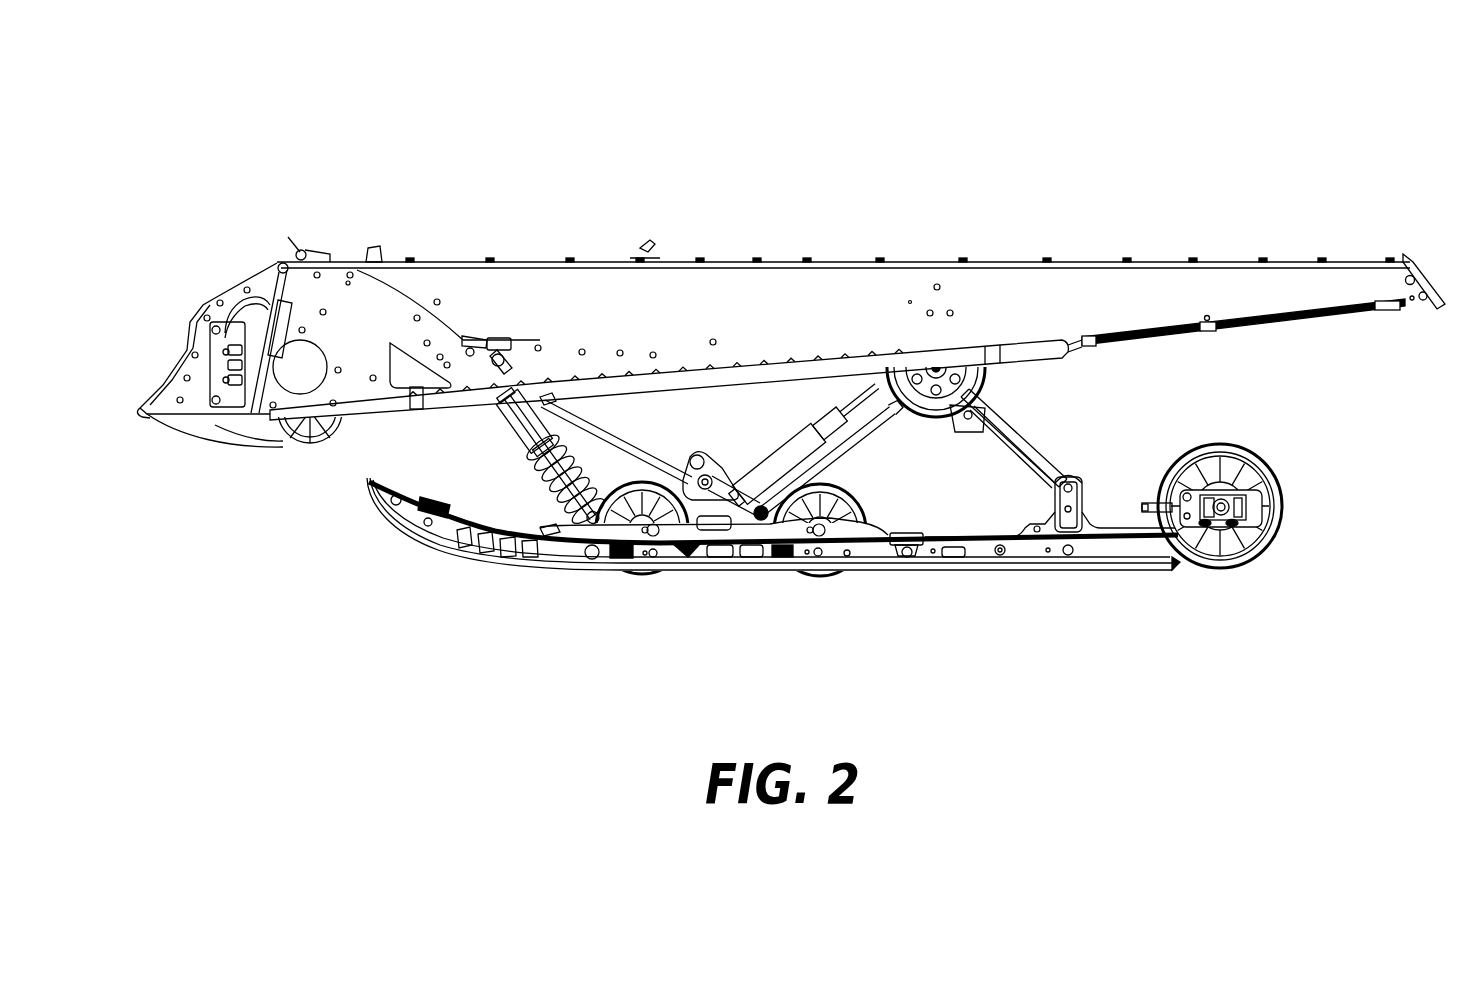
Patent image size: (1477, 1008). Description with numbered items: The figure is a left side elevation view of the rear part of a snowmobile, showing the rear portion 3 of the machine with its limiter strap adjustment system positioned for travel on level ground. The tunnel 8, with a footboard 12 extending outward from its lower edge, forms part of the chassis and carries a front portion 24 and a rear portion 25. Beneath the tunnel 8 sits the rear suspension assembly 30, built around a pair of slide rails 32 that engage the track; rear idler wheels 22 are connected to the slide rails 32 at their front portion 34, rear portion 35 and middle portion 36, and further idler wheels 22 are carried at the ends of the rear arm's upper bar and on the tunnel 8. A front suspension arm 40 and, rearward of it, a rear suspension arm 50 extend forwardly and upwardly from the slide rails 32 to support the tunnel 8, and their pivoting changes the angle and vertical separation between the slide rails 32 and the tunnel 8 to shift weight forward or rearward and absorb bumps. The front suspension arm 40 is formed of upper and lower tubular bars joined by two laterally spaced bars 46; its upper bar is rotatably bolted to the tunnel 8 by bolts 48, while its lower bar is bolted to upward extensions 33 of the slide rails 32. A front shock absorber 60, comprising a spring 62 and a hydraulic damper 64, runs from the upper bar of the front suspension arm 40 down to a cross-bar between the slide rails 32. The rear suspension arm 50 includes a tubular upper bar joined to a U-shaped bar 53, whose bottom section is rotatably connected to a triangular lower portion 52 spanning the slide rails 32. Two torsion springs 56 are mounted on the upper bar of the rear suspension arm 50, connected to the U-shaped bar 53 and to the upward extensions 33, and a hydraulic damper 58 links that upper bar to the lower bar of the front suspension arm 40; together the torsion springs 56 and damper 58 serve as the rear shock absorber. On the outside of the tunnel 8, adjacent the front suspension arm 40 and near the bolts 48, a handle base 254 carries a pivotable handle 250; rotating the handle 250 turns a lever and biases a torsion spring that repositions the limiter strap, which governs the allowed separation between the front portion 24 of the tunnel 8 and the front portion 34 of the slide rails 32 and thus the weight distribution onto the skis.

The rear portion 3 is at (1269, 167).
The tunnel 8 is at (676, 262).
The footboard 12 is at (777, 370).
The idler wheels 22 is at (993, 348).
The front portion of the tunnel 24 is at (498, 517).
The rear portion of the tunnel 25 is at (1377, 327).
The rear suspension assembly 30 is at (956, 441).
The slide rails 32 is at (725, 578).
The upward extension 33 is at (730, 490).
The front portion of the slide rails 34 is at (418, 567).
The rear portion of the slide rails 35 is at (1146, 575).
The middle portion of the slide rails 36 is at (781, 564).
The front suspension arm 40 is at (600, 425).
The lateral bars 46 is at (604, 425).
The bolts 48 is at (462, 338).
The rear suspension arm 50 is at (995, 405).
The lower portion 52 is at (1082, 500).
The U-shaped bar 53 is at (1040, 452).
The torsion springs 56 is at (840, 453).
The hydraulic damper 58 is at (793, 437).
The front shock absorber 60 is at (524, 481).
The spring 62 is at (548, 531).
The hydraulic damper 64 is at (517, 427).
The handle 250 is at (533, 341).
The handle base 254 is at (495, 337).